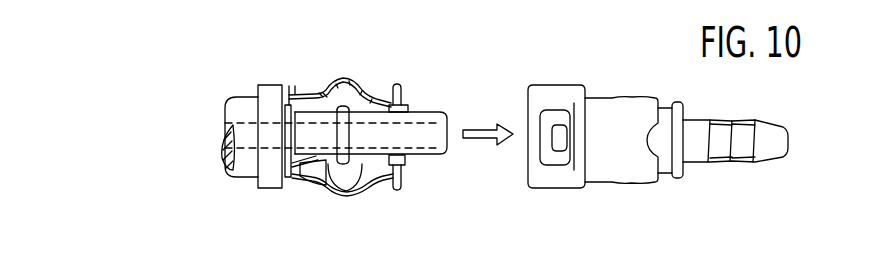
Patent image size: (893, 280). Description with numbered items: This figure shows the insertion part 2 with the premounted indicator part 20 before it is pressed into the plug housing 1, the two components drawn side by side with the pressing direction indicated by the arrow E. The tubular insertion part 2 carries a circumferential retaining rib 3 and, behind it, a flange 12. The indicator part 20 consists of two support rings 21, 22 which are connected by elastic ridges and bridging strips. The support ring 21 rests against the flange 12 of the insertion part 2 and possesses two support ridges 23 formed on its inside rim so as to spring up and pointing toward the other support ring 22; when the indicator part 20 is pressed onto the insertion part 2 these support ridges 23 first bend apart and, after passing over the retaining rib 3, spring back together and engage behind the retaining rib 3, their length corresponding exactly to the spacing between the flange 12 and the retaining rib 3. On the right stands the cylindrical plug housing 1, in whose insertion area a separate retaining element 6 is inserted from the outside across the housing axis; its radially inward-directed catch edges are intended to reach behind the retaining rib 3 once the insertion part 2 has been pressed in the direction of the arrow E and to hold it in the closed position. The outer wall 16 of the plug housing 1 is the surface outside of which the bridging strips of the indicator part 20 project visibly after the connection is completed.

The plug housing 1 is at (630, 170).
The insertion part 2 is at (425, 132).
The retaining rib 3 is at (352, 192).
The retaining element 6 is at (572, 137).
The flange 12 is at (272, 92).
The outer wall 16 is at (555, 185).
The indicator part 20 is at (355, 67).
The support ring 21 is at (288, 178).
The support ring 22 is at (395, 190).
The support ridges 23 is at (325, 188).
The arrow E is at (478, 140).